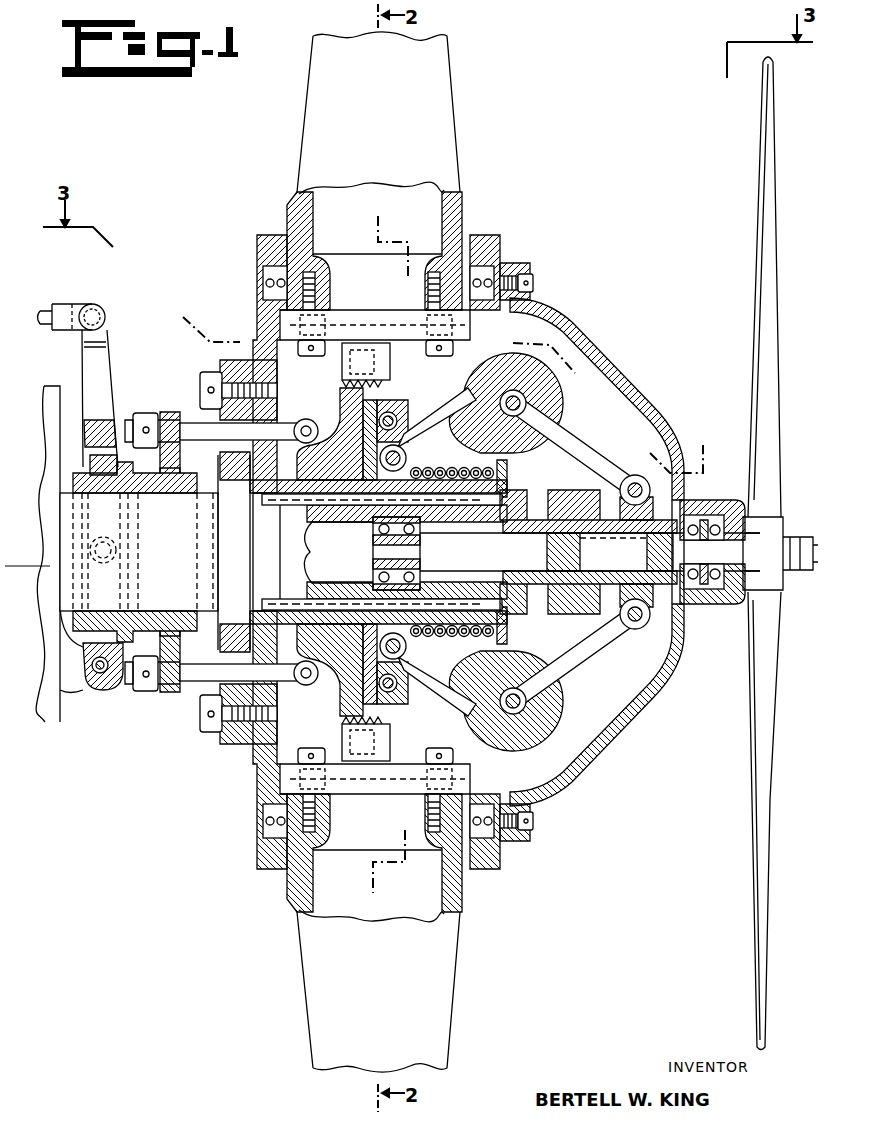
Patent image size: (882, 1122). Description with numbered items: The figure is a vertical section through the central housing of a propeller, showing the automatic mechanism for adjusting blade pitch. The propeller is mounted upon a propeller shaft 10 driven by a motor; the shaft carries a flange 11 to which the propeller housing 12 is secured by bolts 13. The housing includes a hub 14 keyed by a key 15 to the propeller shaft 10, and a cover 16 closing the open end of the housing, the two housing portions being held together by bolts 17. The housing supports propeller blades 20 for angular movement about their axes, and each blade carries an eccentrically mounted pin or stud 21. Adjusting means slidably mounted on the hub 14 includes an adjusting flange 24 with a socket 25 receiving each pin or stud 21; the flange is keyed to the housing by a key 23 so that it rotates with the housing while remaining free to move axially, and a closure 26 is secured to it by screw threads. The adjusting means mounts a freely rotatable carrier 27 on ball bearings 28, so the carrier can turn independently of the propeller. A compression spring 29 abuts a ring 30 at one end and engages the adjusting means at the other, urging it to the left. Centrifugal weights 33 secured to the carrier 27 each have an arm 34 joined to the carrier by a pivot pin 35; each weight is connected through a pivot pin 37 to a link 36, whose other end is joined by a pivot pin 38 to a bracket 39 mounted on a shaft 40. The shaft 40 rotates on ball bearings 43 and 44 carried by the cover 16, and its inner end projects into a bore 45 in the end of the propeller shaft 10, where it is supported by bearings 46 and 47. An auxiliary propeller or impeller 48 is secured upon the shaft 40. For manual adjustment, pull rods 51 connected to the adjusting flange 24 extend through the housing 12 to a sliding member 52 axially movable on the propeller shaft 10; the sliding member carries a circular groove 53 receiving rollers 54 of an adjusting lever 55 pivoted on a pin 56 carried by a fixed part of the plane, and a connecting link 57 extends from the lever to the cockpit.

The propeller shaft 10 is at (200, 497).
The flange 11 is at (245, 742).
The propeller housing 12 is at (258, 318).
The bolts 13 is at (202, 383).
The hub 14 is at (508, 630).
The key 15 is at (462, 516).
The cover 16 is at (627, 378).
The bolts 17 is at (533, 283).
The propeller blades 20 is at (444, 119).
The pin or stud 21 is at (392, 358).
The key 23 is at (297, 600).
The adjusting flange 24 is at (342, 405).
The socket 25 is at (342, 365).
The closure 26 is at (405, 690).
The carrier 27 is at (405, 410).
The ball bearings 28 is at (405, 425).
The compression spring 29 is at (481, 468).
The ring 30 is at (508, 470).
The weights 33 is at (553, 386).
The arm 34 is at (430, 458).
The pivot pin 35 is at (406, 454).
The link 36 is at (578, 440).
The pivot pin 37 is at (565, 419).
The pivot pin 38 is at (637, 477).
The bracket 39 is at (684, 462).
The shaft 40 is at (512, 561).
The ball bearing 43 is at (697, 512).
The ball bearing 44 is at (713, 594).
The bore 45 is at (505, 518).
The bearing 46 is at (420, 525).
The bearing 47 is at (373, 529).
The auxiliary propeller or impeller 48 is at (750, 723).
The pull rods 51 is at (186, 426).
The sliding member 52 is at (178, 646).
The circular groove 53 is at (95, 460).
The rollers 54 is at (103, 564).
The adjusting lever 55 is at (98, 372).
The pin 56 is at (92, 691).
The connecting link 57 is at (65, 303).